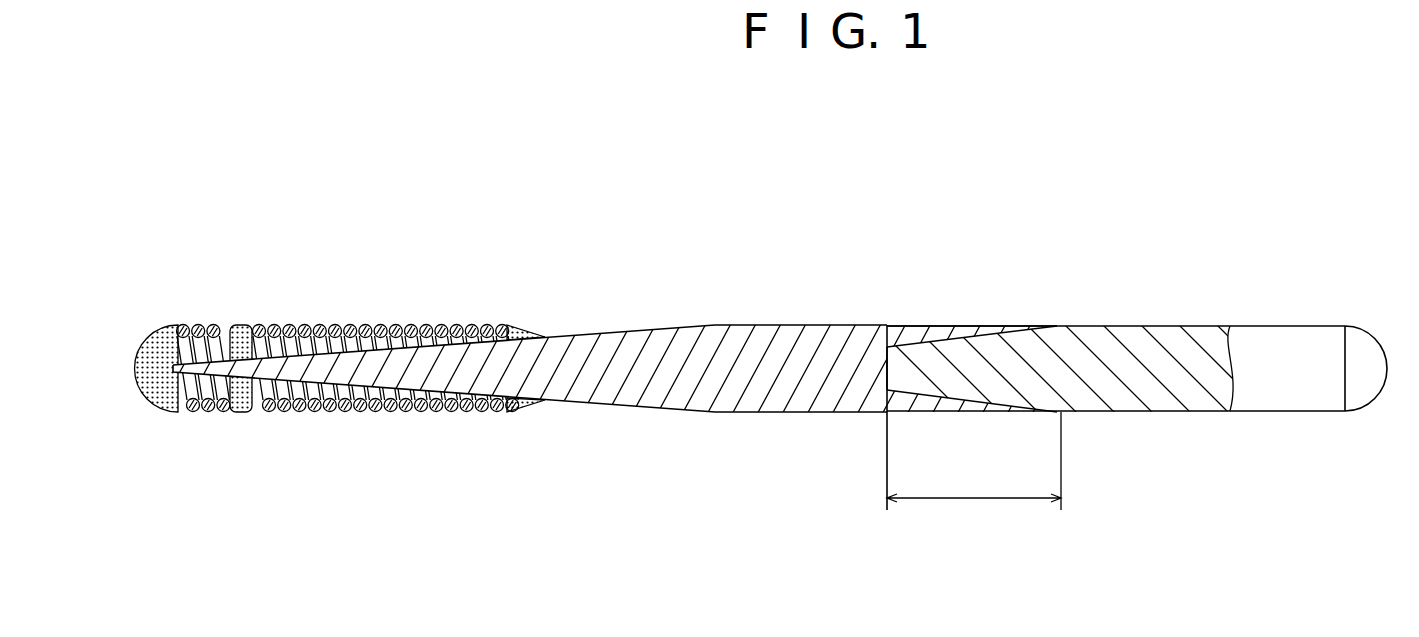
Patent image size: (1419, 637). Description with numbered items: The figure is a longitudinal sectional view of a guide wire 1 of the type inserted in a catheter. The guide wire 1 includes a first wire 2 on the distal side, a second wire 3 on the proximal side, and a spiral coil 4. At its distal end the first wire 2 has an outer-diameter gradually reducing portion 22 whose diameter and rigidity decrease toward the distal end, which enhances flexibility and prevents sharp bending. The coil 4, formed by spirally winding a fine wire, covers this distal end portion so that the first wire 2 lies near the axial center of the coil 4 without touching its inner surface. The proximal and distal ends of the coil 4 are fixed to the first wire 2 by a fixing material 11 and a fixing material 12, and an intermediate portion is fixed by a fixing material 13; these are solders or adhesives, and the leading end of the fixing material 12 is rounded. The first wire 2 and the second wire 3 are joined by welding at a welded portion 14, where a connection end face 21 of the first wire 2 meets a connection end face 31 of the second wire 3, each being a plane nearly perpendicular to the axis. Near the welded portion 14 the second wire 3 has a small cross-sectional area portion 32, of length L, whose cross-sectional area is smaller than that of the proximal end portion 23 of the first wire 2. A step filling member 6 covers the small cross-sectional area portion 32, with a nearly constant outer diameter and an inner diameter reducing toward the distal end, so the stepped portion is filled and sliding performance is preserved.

The guide wire 1 is at (836, 268).
The first wire 2 is at (716, 325).
The second wire 3 is at (1165, 325).
The coil 4 is at (413, 322).
The step filling member 6 is at (959, 327).
The fixing material 11 is at (521, 323).
The fixing material 12 is at (165, 324).
The fixing material 13 is at (244, 323).
The welded portion 14 is at (887, 325).
The connection end face 21 is at (896, 397).
The outer-diameter gradually reducing portion 22 is at (353, 360).
The proximal end portion 23 is at (790, 338).
The connection end face 31 is at (878, 388).
The small cross-sectional area portion 32 is at (980, 383).
The length L is at (974, 461).